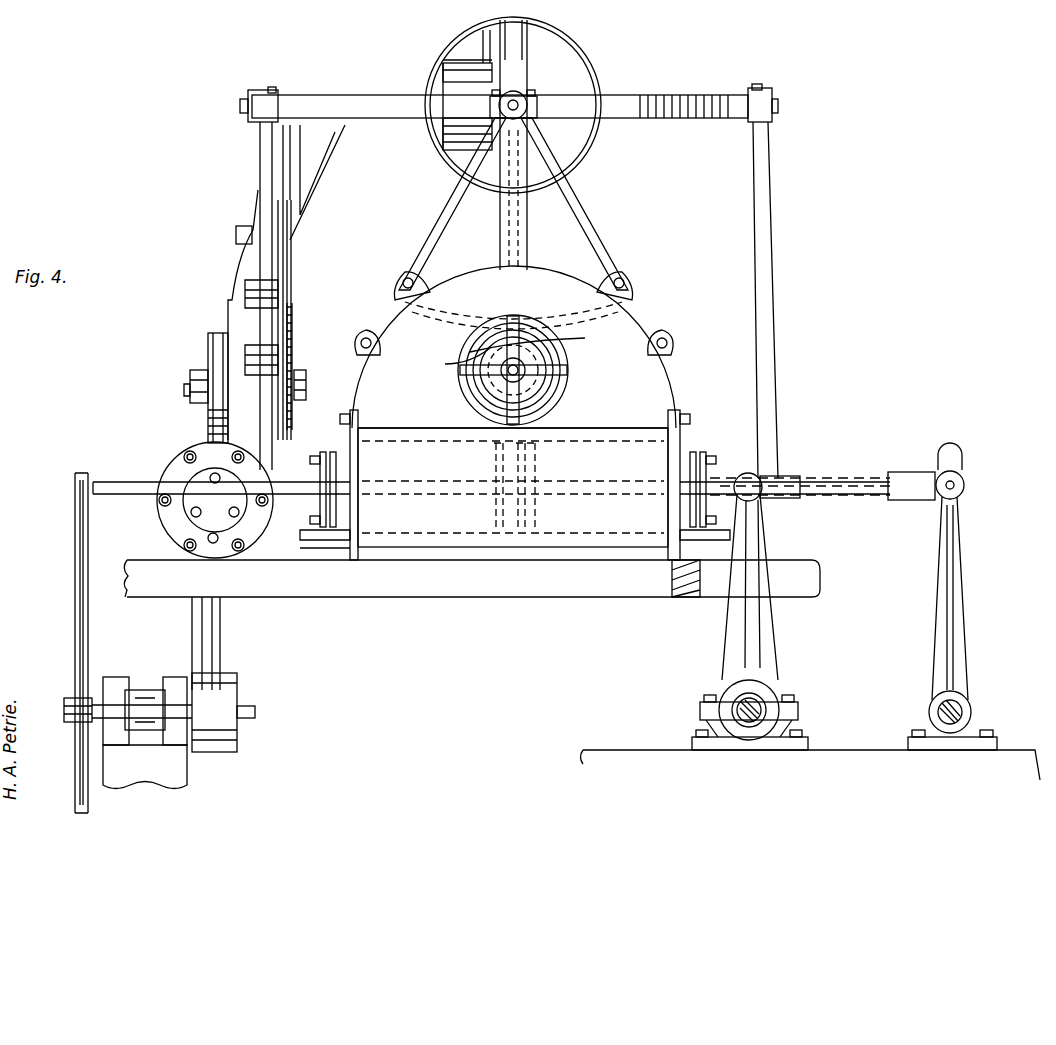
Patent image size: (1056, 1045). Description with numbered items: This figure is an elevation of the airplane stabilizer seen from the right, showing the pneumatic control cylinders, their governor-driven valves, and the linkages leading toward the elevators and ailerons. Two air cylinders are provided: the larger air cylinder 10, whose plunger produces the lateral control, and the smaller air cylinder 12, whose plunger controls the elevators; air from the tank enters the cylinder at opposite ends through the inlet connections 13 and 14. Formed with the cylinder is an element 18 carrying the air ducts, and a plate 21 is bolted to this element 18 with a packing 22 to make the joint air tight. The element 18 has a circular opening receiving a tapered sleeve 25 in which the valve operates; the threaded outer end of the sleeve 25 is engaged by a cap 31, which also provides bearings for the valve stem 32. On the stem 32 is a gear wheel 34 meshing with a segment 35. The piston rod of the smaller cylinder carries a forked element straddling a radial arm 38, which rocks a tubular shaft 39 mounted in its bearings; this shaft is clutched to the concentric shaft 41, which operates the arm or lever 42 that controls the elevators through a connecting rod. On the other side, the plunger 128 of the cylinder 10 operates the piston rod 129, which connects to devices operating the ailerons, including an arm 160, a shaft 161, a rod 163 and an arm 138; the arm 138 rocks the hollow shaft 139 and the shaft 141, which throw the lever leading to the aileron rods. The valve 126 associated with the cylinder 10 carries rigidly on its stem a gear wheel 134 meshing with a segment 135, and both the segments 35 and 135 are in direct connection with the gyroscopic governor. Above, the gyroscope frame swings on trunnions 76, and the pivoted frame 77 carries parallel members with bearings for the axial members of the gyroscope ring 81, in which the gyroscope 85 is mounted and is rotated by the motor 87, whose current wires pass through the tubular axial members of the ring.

The air cylinder 10 is at (462, 505).
The air cylinder 12 is at (185, 470).
The inlet connection 13 is at (695, 578).
The inlet connection 14 is at (323, 540).
The element 18 is at (514, 347).
The plate 21 is at (272, 262).
The packing 22 is at (292, 318).
The tapered sleeve 25 is at (451, 362).
The cap 31 is at (560, 398).
The valve stem 32 is at (510, 378).
The gear wheel 34 is at (310, 418).
The segment 35 is at (297, 326).
The radial arm 38 is at (212, 648).
The tubular shaft 39 is at (142, 700).
The concentric shaft 41 is at (64, 712).
The arm or lever 42 is at (76, 538).
The trunnions 76 is at (516, 104).
The pivoted frame 77 is at (518, 50).
The gyroscope ring 81 is at (592, 148).
The gyroscope 85 is at (468, 70).
The motor 87 is at (455, 128).
The valve 126 is at (544, 337).
The plunger 128 is at (540, 468).
The piston rod 129 is at (840, 480).
The gear wheel 134 is at (553, 385).
The segment 135 is at (630, 300).
The arm 138 is at (765, 640).
The hollow shaft 139 is at (752, 700).
The shaft 141 is at (765, 708).
The arm 160 is at (965, 585).
The shaft 161 is at (966, 712).
The rod 163 is at (798, 476).